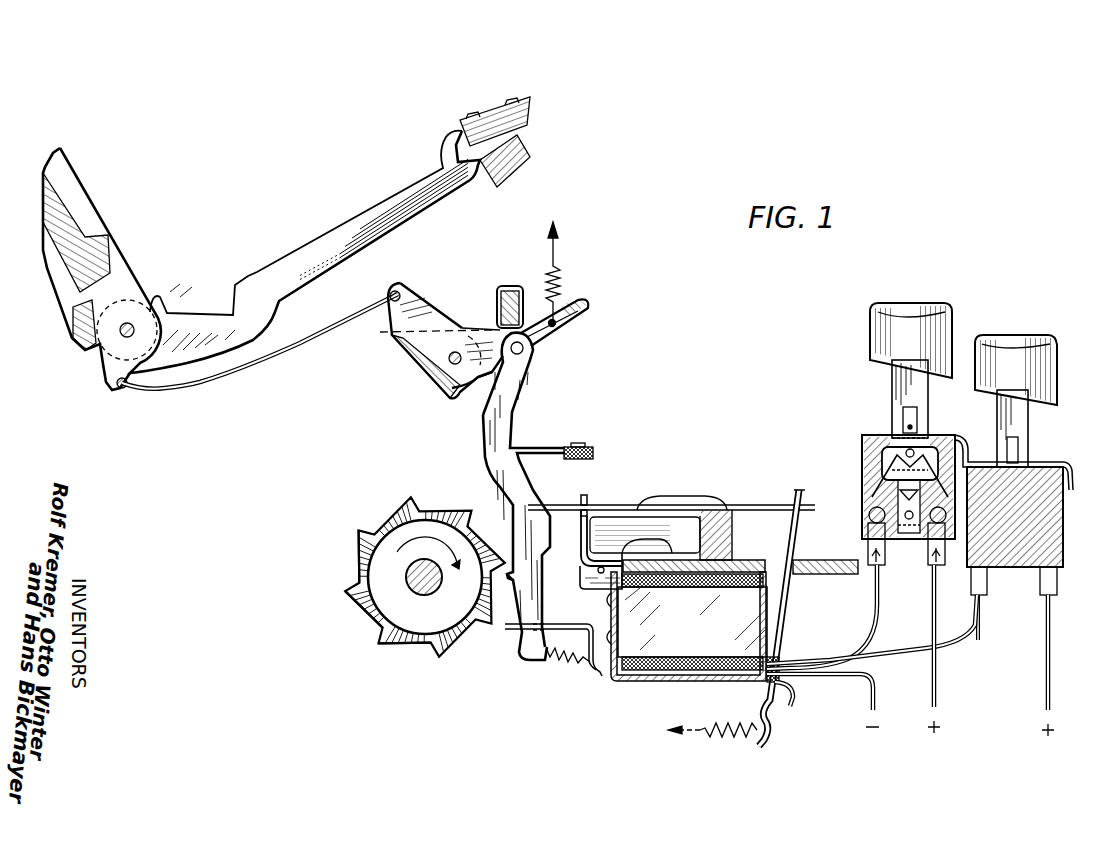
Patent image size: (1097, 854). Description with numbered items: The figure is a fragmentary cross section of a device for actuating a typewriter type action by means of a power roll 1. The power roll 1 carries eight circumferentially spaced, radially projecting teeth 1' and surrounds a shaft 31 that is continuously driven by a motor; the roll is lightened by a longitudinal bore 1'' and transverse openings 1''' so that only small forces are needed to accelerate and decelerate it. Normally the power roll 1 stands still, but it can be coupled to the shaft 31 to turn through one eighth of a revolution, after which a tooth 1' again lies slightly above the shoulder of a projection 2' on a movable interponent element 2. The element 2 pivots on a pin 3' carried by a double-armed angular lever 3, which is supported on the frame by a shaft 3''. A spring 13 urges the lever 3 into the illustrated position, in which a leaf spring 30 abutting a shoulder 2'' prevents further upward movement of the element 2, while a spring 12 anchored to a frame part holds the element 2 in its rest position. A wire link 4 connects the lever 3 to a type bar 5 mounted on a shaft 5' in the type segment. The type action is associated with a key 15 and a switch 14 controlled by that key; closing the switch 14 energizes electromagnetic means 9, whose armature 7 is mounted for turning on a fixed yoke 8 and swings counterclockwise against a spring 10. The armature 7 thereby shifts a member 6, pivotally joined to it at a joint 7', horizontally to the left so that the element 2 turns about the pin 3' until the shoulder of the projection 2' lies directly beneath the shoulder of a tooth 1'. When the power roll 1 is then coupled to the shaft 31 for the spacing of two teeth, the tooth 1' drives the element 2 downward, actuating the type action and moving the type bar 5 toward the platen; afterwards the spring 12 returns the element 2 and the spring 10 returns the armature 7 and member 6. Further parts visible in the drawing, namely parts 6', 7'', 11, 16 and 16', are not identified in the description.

The power roll 1 is at (425, 577).
The teeth 1' is at (404, 659).
The longitudinal bore 1'' is at (354, 612).
The transverse openings 1''' is at (335, 557).
The movable interponent element 2 is at (524, 496).
The projection 2' is at (500, 623).
The shoulder 2'' is at (539, 464).
The double-armed angular lever 3 is at (451, 359).
The pin 3' is at (549, 332).
The shaft 3'' is at (461, 326).
The wire link 4 is at (270, 358).
The type bar 5 is at (286, 243).
The shaft 5' is at (112, 348).
The actuating member 6 is at (671, 518).
The contact spring tab 6' is at (568, 491).
The armature 7 is at (788, 618).
The joint 7' is at (809, 477).
The armature lower end 7'' is at (796, 707).
The fixed yoke 8 is at (655, 683).
The electromagnetic means 9 is at (703, 654).
The spring 10 is at (739, 738).
The stop 11 is at (846, 575).
The spring 12 is at (570, 667).
The spring 13 is at (562, 281).
The switch 14 is at (856, 453).
The key 15 is at (947, 304).
The contact support 16 is at (629, 550).
The contact support tab 16' is at (607, 492).
The leaf spring 30 is at (555, 449).
The shaft 31 is at (424, 560).